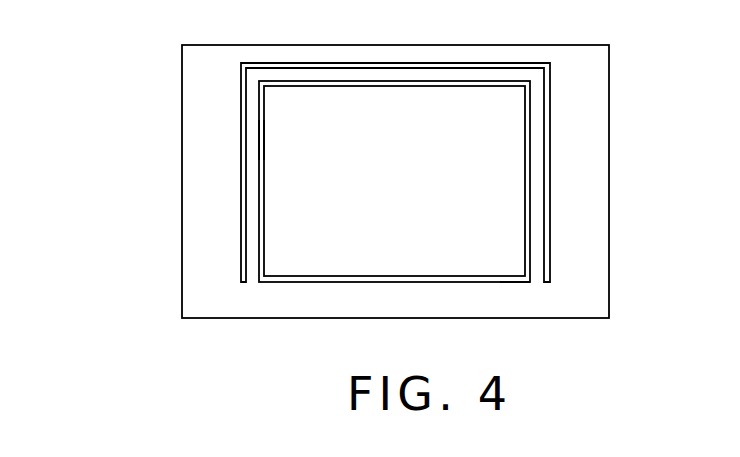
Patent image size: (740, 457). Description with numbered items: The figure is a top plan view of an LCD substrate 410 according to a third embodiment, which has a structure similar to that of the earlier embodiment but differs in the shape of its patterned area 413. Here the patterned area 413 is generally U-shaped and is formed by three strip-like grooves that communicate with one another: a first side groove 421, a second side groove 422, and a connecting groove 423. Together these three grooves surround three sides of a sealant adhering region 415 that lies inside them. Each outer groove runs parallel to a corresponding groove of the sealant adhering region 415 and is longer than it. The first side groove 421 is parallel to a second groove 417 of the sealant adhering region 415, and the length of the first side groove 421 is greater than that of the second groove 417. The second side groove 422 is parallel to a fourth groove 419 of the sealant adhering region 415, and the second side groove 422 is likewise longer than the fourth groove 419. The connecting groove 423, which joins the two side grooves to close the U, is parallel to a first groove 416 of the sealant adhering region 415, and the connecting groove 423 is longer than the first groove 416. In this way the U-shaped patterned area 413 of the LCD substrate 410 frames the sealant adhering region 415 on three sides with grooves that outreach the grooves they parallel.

The LCD substrate 410 is at (421, 26).
The patterned area 413 is at (288, 142).
The sealant adhering region 415 is at (513, 285).
The first groove 416 is at (477, 164).
The second groove 417 is at (482, 181).
The fourth groove 419 is at (480, 141).
The first side groove 421 is at (322, 188).
The second side groove 422 is at (241, 170).
The connecting groove 423 is at (305, 65).